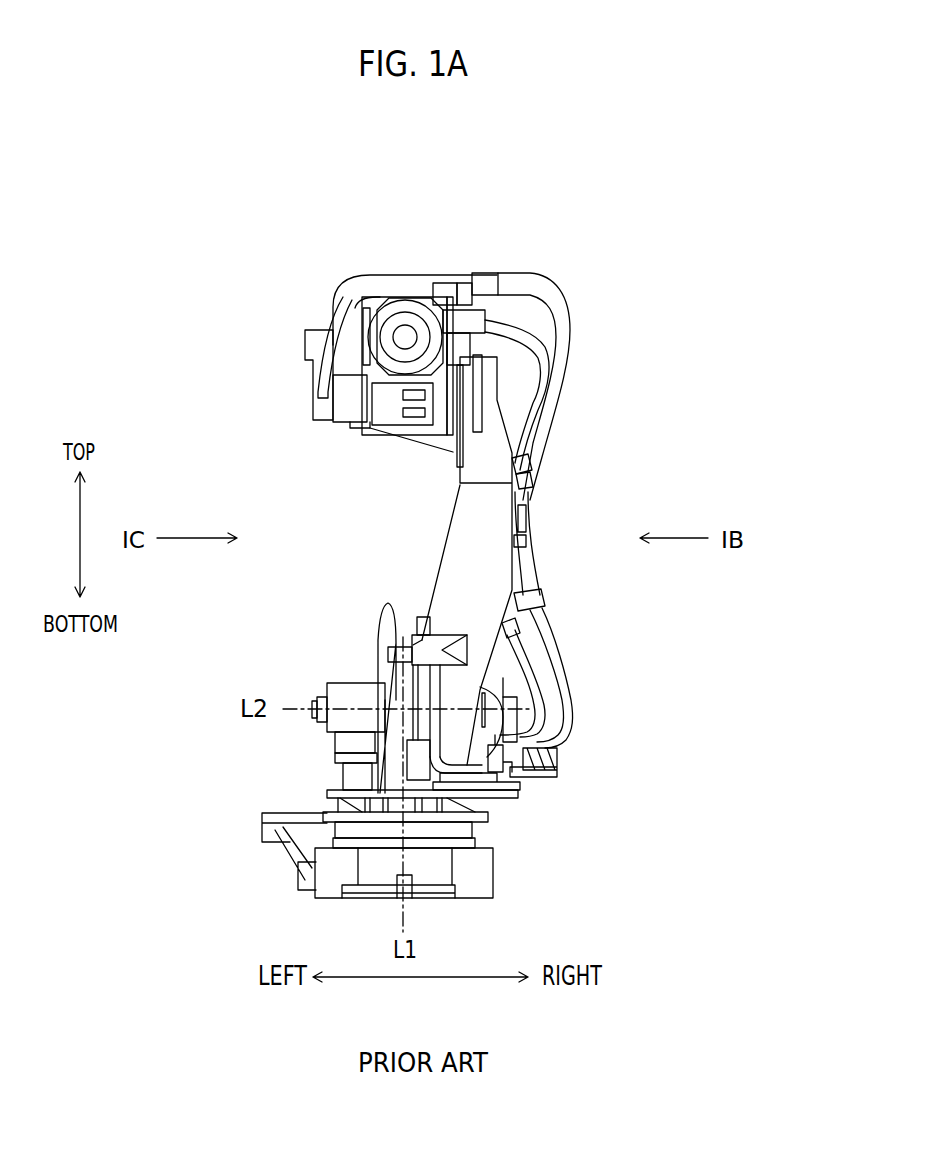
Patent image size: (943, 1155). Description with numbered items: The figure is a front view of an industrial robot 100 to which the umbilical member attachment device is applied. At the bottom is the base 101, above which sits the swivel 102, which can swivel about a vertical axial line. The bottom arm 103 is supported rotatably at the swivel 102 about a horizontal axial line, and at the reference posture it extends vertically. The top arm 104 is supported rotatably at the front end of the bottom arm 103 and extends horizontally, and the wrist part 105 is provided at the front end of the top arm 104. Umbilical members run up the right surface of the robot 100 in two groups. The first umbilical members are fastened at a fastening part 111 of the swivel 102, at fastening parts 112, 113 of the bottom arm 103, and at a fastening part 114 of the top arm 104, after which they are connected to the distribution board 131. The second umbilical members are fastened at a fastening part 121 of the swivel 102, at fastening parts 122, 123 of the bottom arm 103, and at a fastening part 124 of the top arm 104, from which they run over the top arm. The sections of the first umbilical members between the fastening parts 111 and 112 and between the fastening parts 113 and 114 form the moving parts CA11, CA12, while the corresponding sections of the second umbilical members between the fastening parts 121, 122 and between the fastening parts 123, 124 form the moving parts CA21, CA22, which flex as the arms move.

The robot 100 is at (582, 208).
The base 101 is at (495, 868).
The swivel 102 is at (342, 776).
The bottom arm 103 is at (442, 553).
The top arm 104 is at (378, 280).
The wrist part 105 is at (366, 324).
The fastening part 111 is at (508, 776).
The fastening part 112 is at (525, 626).
The fastening part 113 is at (540, 460).
The fastening part 114 is at (455, 283).
The fastening part 121 is at (555, 765).
The fastening part 122 is at (545, 593).
The fastening part 123 is at (537, 488).
The fastening part 124 is at (486, 273).
The distribution board 131 is at (382, 425).
The moving part CA11 is at (560, 702).
The moving part CA12 is at (548, 426).
The moving part CA21 is at (566, 657).
The moving part CA22 is at (570, 336).